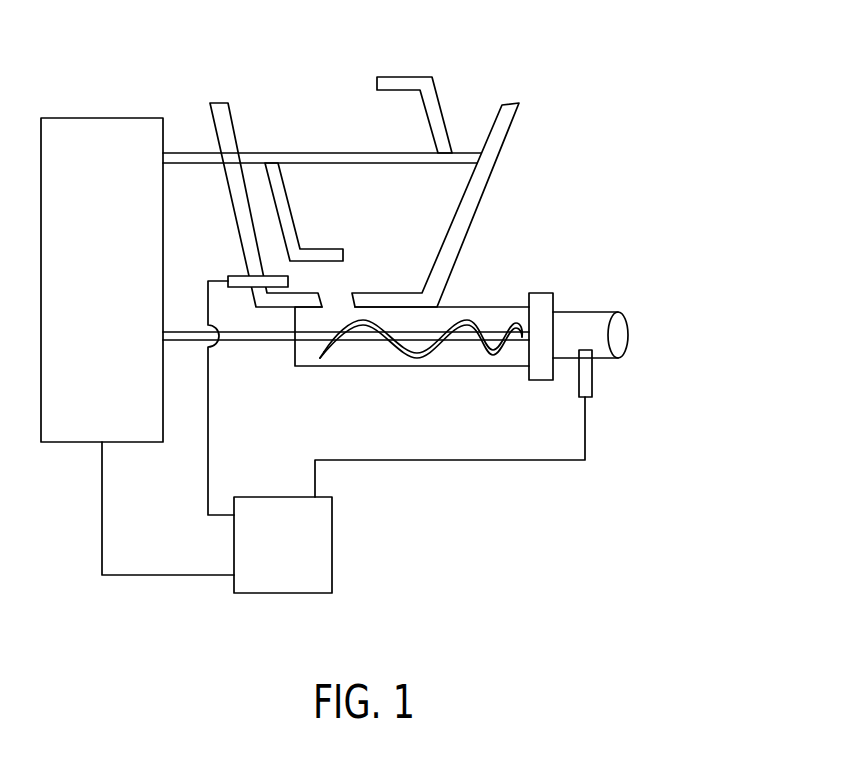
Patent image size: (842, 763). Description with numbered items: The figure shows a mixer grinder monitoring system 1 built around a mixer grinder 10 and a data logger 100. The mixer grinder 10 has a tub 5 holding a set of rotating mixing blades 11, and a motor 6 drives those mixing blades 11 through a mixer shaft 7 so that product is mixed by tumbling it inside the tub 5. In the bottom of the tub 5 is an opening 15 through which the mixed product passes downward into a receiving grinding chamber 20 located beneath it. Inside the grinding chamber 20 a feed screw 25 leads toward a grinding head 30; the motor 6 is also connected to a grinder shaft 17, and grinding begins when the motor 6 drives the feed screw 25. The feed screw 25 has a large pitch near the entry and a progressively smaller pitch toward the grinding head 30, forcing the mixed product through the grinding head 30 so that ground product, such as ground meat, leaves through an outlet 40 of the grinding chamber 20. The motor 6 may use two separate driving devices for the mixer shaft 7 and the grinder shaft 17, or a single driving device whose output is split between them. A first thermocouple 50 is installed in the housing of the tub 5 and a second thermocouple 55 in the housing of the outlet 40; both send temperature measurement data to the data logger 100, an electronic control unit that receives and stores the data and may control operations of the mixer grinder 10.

The mixer grinder monitoring system 1 is at (705, 87).
The tub 5 is at (513, 102).
The motor 6 is at (102, 118).
The mixer shaft 7 is at (200, 152).
The mixer grinder 10 is at (572, 137).
The rotating mixing blades 11 is at (405, 75).
The opening 15 is at (337, 300).
The grinder shaft 17 is at (190, 343).
The grinding chamber 20 is at (488, 305).
The feed screw 25 is at (328, 352).
The grinding head 30 is at (542, 293).
The outlet 40 is at (615, 317).
The first thermocouple 50 is at (235, 273).
The second thermocouple 55 is at (593, 377).
The data logger 100 is at (272, 595).